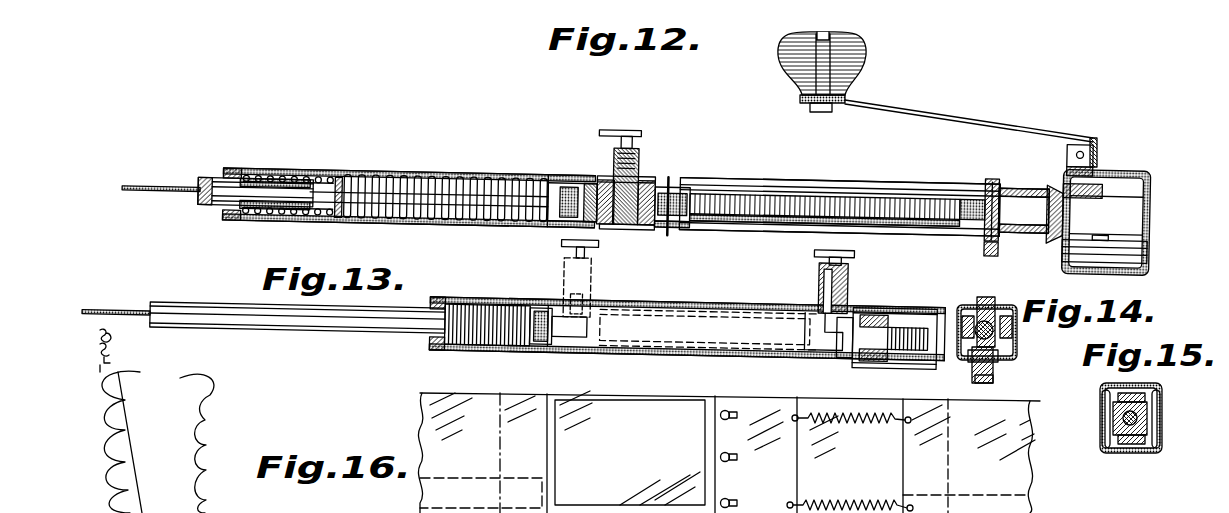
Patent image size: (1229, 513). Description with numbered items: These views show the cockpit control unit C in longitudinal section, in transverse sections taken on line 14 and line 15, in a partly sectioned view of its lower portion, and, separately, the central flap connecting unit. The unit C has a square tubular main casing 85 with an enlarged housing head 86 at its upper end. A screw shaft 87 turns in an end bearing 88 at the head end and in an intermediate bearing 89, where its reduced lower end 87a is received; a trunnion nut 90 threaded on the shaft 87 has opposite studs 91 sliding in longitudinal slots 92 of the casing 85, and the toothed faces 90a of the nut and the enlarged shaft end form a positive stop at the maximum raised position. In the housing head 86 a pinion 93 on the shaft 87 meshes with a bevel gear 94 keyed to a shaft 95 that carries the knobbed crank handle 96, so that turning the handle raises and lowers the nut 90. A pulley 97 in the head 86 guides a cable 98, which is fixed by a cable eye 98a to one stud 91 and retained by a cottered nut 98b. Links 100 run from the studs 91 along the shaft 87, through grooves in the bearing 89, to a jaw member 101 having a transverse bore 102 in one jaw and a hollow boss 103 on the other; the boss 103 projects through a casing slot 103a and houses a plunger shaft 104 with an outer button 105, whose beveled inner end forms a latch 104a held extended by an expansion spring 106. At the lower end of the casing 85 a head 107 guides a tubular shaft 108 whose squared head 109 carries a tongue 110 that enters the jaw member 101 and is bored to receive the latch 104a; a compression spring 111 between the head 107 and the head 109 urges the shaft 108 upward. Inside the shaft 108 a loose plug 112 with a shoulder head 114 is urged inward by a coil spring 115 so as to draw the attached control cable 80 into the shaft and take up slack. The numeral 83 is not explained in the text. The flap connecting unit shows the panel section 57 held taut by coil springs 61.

In FIG. 12, the control cable 80 is at (158, 196).
In FIG. 13, the control cable 80 is at (113, 311).
In FIG. 12, the main casing 85 is at (348, 170).
In FIG. 13, the main casing 85 is at (503, 297).
In FIG. 14, the main casing 85 is at (1012, 355).
In FIG. 12, the housing head 86 is at (1150, 192).
In FIG. 12, the shaft 87 is at (822, 200).
In FIG. 14, the shaft 87 is at (997, 332).
In FIG. 12, the reduced inner end of shaft 87a is at (648, 236).
In FIG. 15, the reduced inner end of shaft 87a is at (1162, 415).
In FIG. 12, the end bearing 88 is at (1055, 208).
In FIG. 12, the bearing 89 is at (706, 184).
In FIG. 15, the bearing 89 is at (1160, 400).
In FIG. 12, the trunnion nut 90 is at (932, 190).
In FIG. 14, the trunnion nut 90 is at (1015, 312).
In FIG. 12, the toothed faces 90a is at (972, 228).
In FIG. 12, the studs 91 is at (982, 190).
In FIG. 14, the studs 91 is at (982, 300).
In FIG. 12, the slots 92 is at (772, 186).
In FIG. 13, the slots 92 is at (883, 316).
In FIG. 14, the slots 92 is at (1003, 303).
In FIG. 12, the pinion 93 is at (1140, 222).
In FIG. 12, the bevel gear 94 is at (1148, 208).
In FIG. 12, the shaft 95 is at (1100, 170).
In FIG. 12, the crank handle 96 is at (952, 126).
In FIG. 12, the pulley 97 is at (1152, 244).
In FIG. 12, the cable 98 is at (1075, 268).
In FIG. 14, the cable eye 98a is at (1000, 372).
In FIG. 14, the nut 98b is at (1000, 385).
In FIG. 12, the links 100 is at (875, 187).
In FIG. 13, the links 100 is at (905, 360).
In FIG. 15, the links 100 is at (1140, 395).
In FIG. 12, the jaw member 101 is at (650, 165).
In FIG. 13, the jaw member 101 is at (850, 345).
In FIG. 12, the transverse bore 102 is at (613, 236).
In FIG. 13, the transverse bore 102 is at (815, 355).
In FIG. 12, the hollow boss 103 is at (604, 150).
In FIG. 13, the hollow boss 103 is at (590, 292).
In FIG. 12, the slot 103a is at (426, 182).
In FIG. 13, the slot 103a is at (690, 306).
In FIG. 12, the plunger shaft 104 is at (642, 150).
In FIG. 13, the plunger shaft 104 is at (822, 298).
In FIG. 12, the latch 104a is at (601, 178).
In FIG. 13, the latch 104a is at (812, 326).
In FIG. 12, the head or button 105 is at (638, 125).
In FIG. 12, the coiled expansion spring 106 is at (605, 160).
In FIG. 12, the head 107 is at (225, 178).
In FIG. 13, the head 107 is at (432, 342).
In FIG. 12, the tubular shaft 108 is at (400, 175).
In FIG. 13, the tubular shaft 108 is at (327, 328).
In FIG. 12, the squared head 109 is at (582, 181).
In FIG. 13, the squared head 109 is at (548, 338).
In FIG. 12, the tongue 110 is at (578, 232).
In FIG. 12, the coil compression spring 111 is at (418, 218).
In FIG. 13, the coil compression spring 111 is at (485, 343).
In FIG. 12, the plug 112 is at (266, 215).
In FIG. 12, the shoulder forming head 114 is at (322, 220).
In FIG. 12, the coil spring 115 is at (252, 222).
In FIG. 12, the section line 14- 14 is at (990, 188).
In FIG. 14, the section line 14- 14 is at (988, 300).
In FIG. 12, the section line 15- 15 is at (668, 178).
In FIG. 12, the cockpit control unit C is at (533, 184).
In FIG. 13, the cockpit control unit C is at (517, 308).
In FIG. 15, the core 83 is at (1160, 427).
In FIG. 16, the panel section 57 is at (500, 452).
In FIG. 16, the coil springs 61 is at (828, 502).